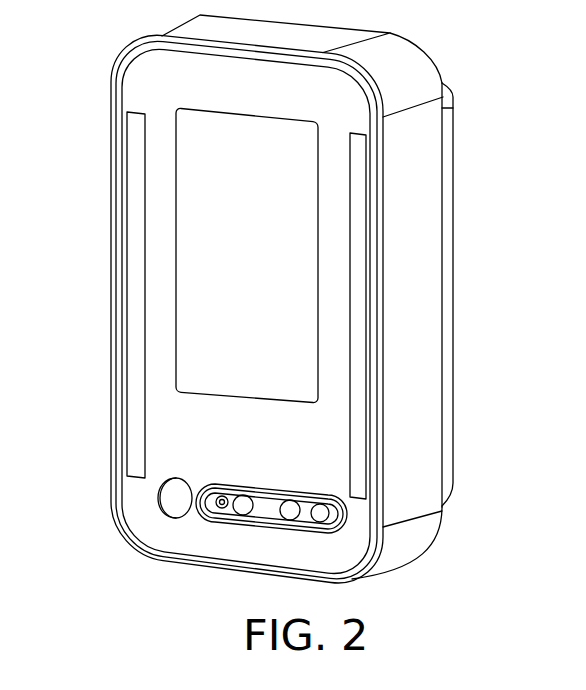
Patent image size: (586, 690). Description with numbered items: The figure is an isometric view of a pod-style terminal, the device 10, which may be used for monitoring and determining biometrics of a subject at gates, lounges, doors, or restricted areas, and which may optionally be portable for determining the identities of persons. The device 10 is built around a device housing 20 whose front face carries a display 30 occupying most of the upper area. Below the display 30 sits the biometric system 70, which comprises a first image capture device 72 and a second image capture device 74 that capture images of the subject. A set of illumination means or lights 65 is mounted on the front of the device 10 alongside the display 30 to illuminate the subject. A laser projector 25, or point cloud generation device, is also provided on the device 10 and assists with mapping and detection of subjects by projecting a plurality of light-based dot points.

The device 10 is at (290, 304).
The device housing 20 is at (410, 388).
The laser projector 25 is at (358, 293).
The display 30 is at (270, 235).
The lights 65 is at (138, 192).
The biometric system 70 is at (359, 534).
The first image capture device 72 is at (262, 509).
The second image capture device 74 is at (175, 494).